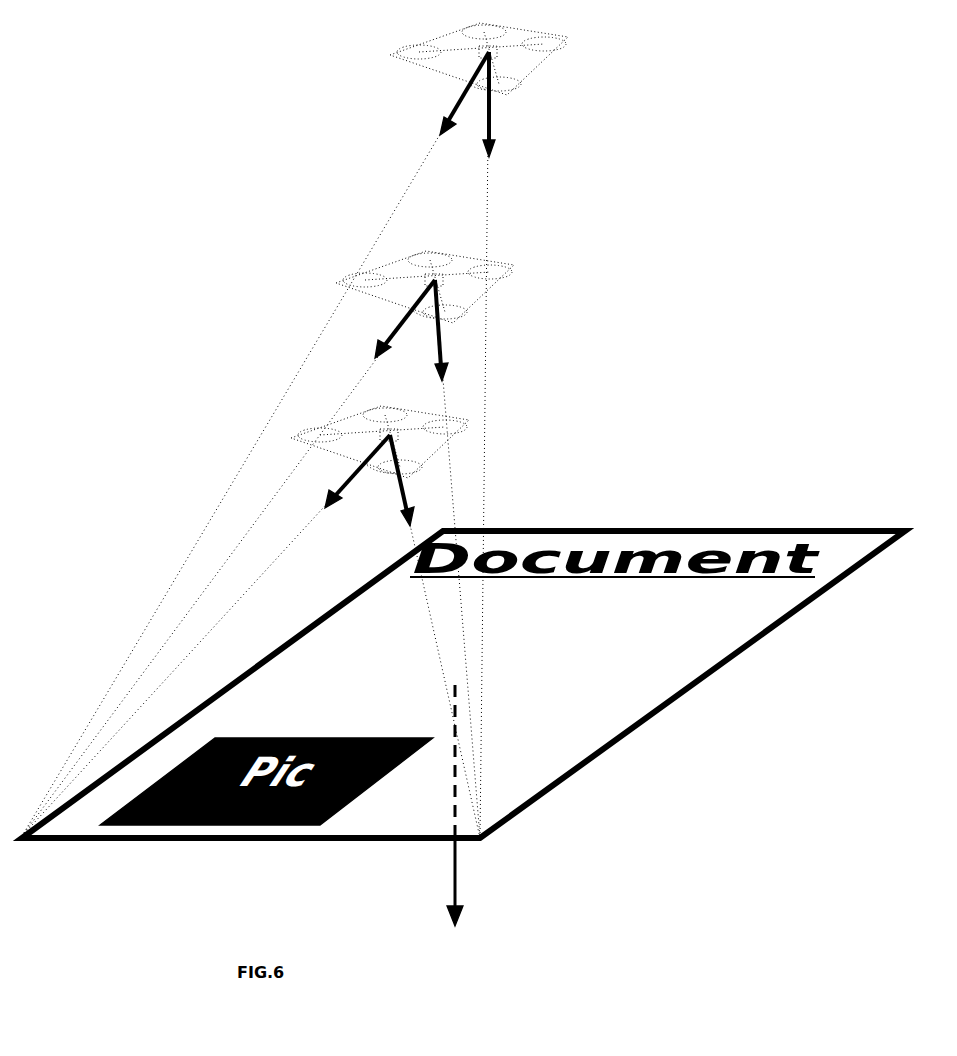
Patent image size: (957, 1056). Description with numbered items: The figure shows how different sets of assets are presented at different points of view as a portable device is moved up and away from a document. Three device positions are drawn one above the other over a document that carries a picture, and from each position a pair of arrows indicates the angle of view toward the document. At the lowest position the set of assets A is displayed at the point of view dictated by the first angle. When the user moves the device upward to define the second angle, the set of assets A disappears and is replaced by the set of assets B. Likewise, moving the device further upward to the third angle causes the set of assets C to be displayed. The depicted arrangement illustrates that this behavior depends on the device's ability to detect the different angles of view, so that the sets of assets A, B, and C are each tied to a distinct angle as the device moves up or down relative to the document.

The set of assets A is at (380, 466).
The set of assets B is at (425, 315).
The set of assets C is at (479, 90).